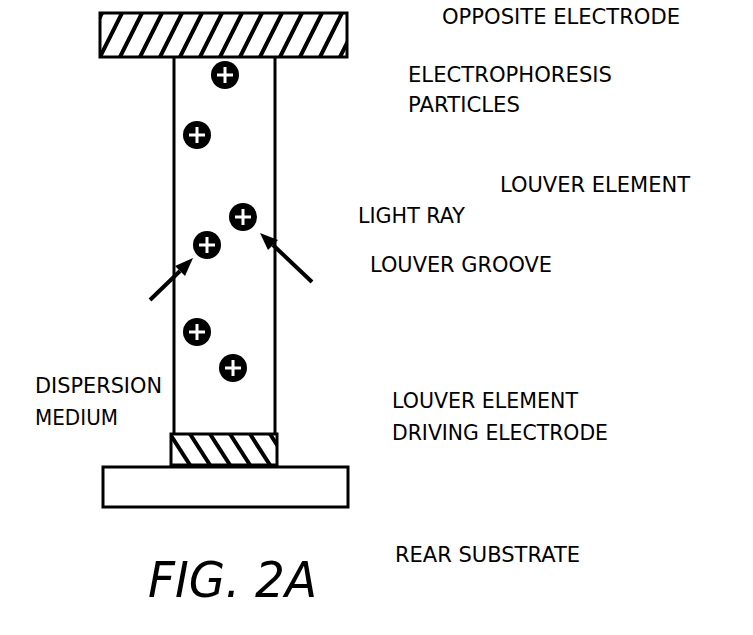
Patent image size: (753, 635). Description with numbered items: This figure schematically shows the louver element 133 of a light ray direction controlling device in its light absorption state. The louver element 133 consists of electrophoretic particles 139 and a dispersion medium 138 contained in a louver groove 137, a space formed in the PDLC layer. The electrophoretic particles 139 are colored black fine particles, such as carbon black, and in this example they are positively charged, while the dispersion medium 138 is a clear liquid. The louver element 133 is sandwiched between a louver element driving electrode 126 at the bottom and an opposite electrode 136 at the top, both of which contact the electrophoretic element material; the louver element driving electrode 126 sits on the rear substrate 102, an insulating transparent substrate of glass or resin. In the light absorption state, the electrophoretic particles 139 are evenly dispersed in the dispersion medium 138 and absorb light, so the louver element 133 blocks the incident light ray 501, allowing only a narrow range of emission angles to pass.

The opposite electrode 136 is at (348, 30).
The electrophoretic particles 139 is at (217, 133).
The louver element 133 is at (422, 165).
The light ray 501 is at (283, 252).
The louver groove 137 is at (273, 365).
The dispersion medium 138 is at (217, 389).
The louver element driving electrode 126 is at (278, 443).
The rear substrate 102 is at (350, 493).